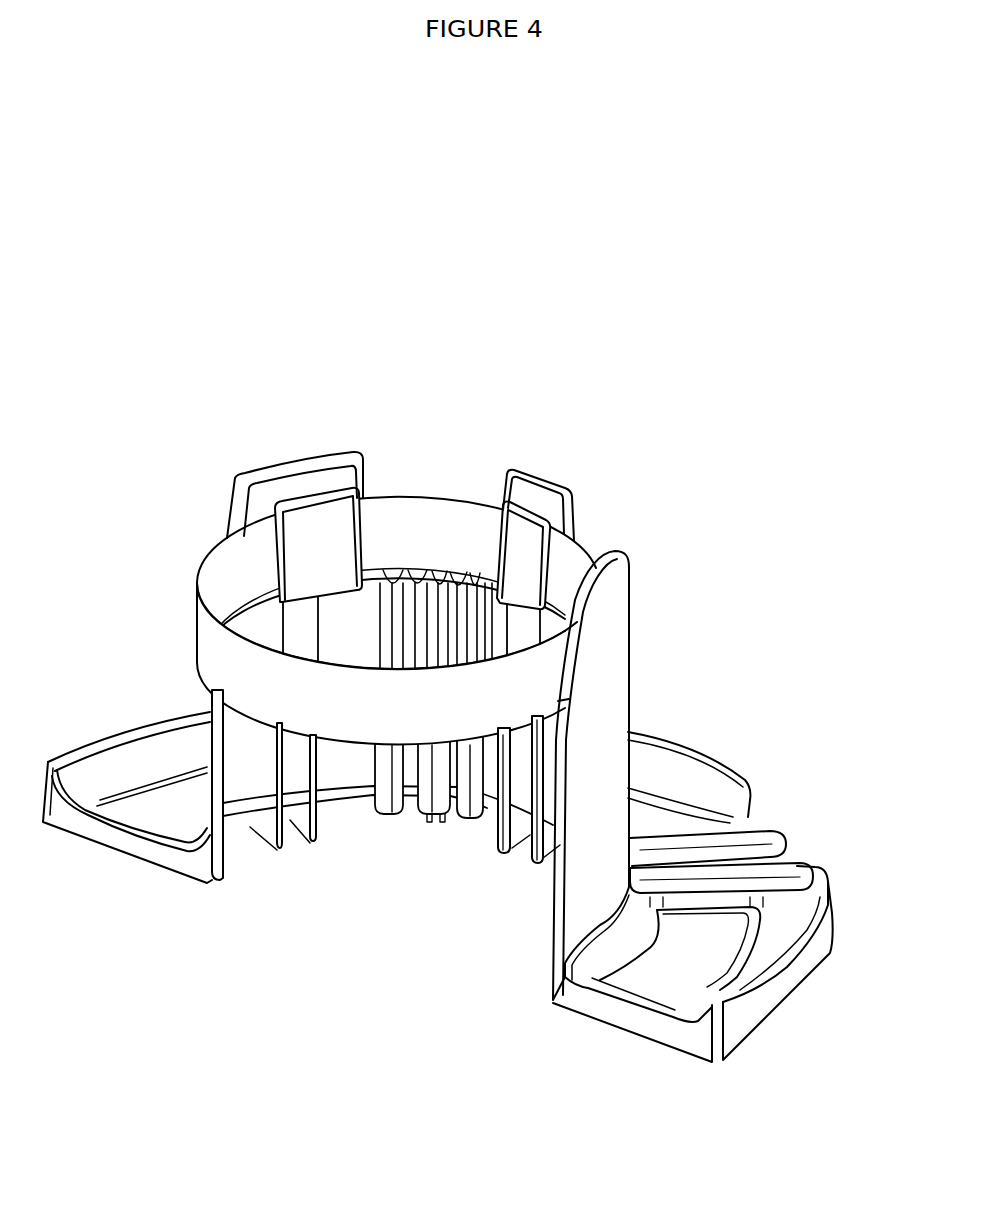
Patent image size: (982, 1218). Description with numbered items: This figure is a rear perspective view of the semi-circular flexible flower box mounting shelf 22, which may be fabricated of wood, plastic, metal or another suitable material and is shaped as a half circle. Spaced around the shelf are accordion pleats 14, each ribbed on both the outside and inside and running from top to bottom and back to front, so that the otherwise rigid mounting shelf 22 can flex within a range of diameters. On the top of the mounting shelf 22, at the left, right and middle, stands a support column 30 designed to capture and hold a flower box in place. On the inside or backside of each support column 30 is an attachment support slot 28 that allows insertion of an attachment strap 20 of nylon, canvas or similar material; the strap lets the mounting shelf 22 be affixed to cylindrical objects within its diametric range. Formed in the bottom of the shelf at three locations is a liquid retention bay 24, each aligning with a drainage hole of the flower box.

The accordion pleat 14 is at (418, 817).
The attachment strap 20 is at (307, 807).
The mounting shelf 22 is at (386, 757).
The liquid retention bay 24 is at (178, 807).
The attachment support slot 28 is at (272, 548).
The support column 30 is at (328, 473).